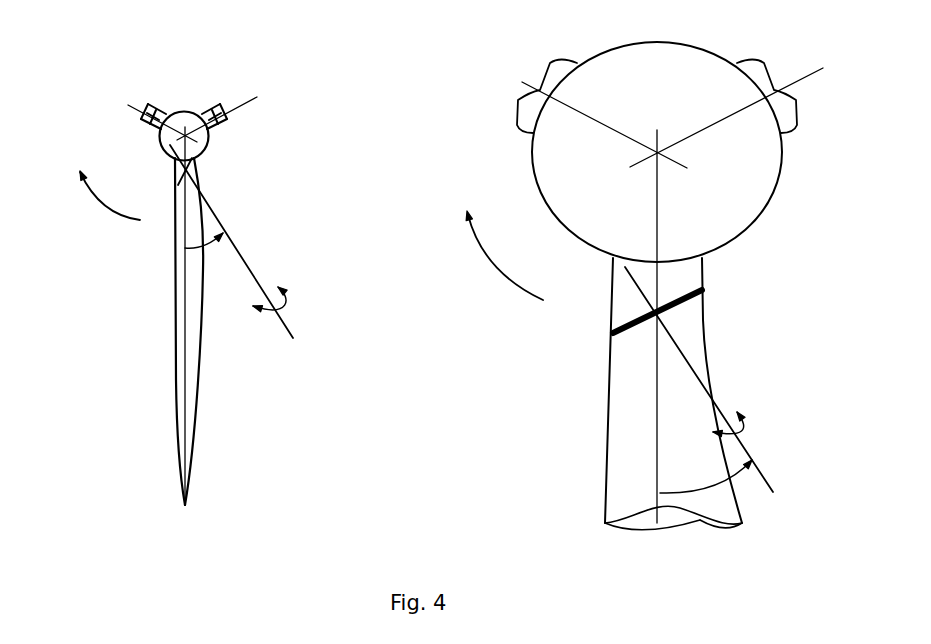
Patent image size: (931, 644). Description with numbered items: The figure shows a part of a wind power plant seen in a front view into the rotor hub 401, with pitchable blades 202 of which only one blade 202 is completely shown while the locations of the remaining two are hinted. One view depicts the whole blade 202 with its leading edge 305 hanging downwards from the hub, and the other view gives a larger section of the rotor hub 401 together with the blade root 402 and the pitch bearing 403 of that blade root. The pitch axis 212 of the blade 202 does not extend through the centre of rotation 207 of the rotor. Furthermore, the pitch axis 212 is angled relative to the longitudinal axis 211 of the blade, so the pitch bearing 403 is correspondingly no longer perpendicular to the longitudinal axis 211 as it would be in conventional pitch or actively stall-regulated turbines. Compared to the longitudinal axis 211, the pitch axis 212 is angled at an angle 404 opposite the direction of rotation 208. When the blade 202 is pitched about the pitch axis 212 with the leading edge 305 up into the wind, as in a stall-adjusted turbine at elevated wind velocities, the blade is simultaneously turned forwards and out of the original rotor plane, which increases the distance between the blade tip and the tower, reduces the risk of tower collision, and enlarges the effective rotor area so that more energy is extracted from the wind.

The blade 202 is at (130, 290).
The centre of rotation 207 is at (185, 137).
The direction of rotation 208 is at (113, 215).
The longitudinal axis 211 is at (185, 340).
The pitch axis 212 is at (270, 297).
The leading edge 305 is at (177, 307).
The rotor hub 401 is at (203, 152).
The blade root 402 is at (692, 313).
The pitch bearing 403 is at (700, 292).
The angle 404 is at (225, 242).